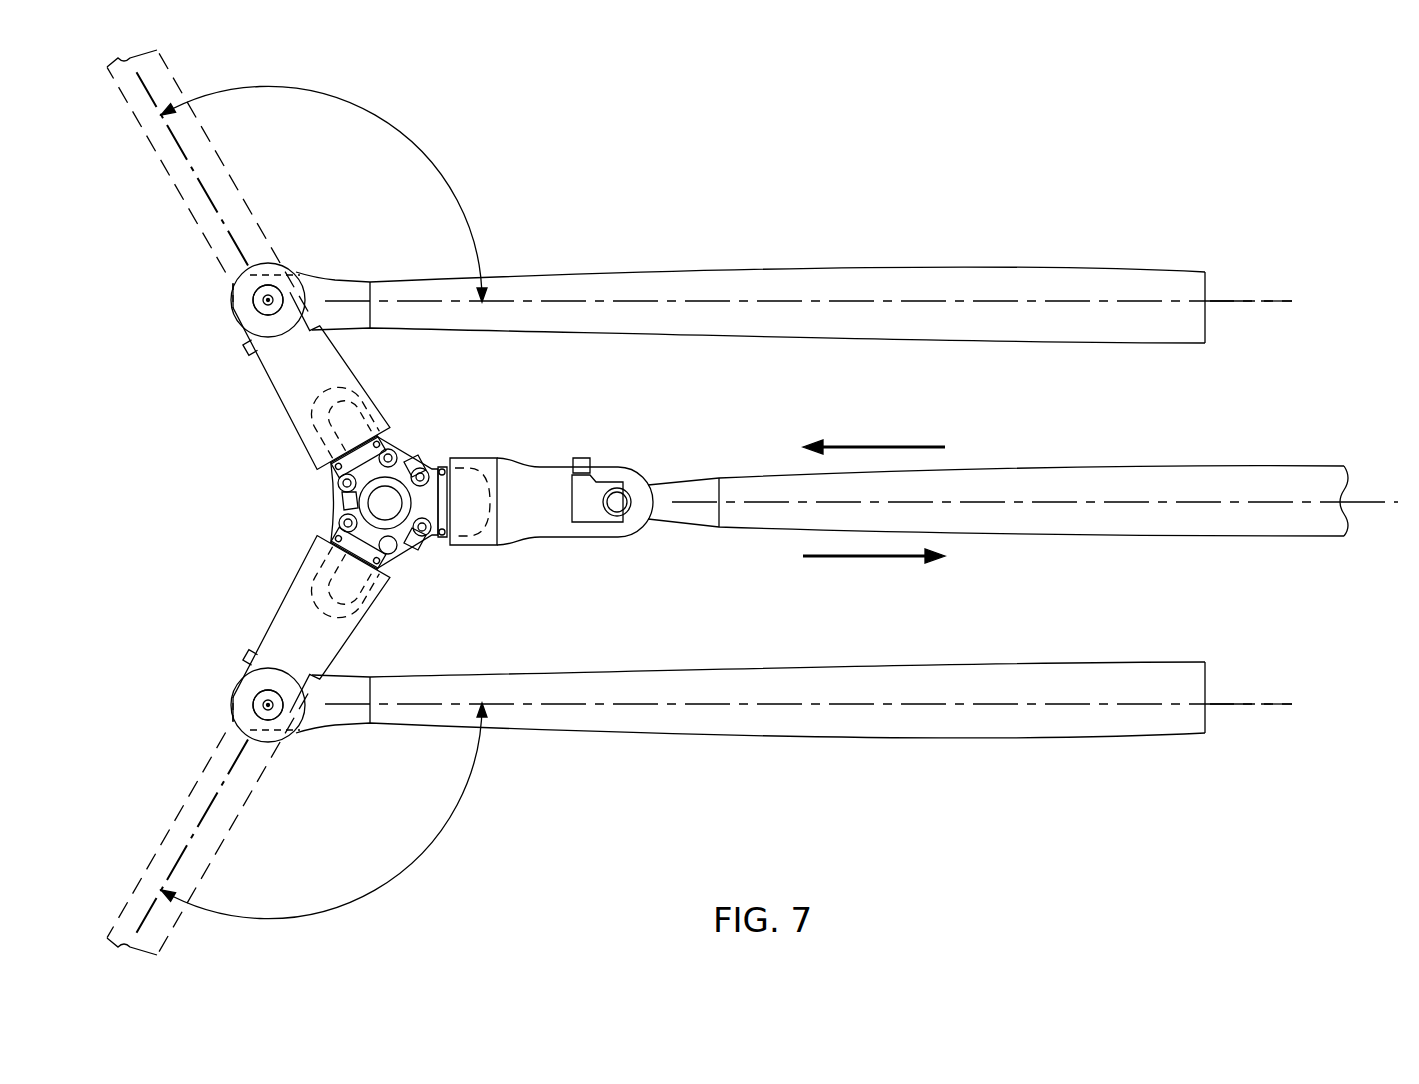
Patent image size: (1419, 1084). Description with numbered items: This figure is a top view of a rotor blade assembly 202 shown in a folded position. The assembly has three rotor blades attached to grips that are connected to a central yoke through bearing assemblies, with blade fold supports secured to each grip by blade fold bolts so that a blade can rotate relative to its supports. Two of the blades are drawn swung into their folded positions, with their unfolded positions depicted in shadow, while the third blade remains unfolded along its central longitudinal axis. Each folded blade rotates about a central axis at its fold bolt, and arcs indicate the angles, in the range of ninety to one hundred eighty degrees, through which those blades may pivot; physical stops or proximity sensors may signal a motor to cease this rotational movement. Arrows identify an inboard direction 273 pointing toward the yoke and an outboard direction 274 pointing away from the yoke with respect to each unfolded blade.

The rotor blade assembly 202 is at (1090, 158).
The inboard direction 273 is at (882, 445).
The outboard direction 274 is at (852, 559).